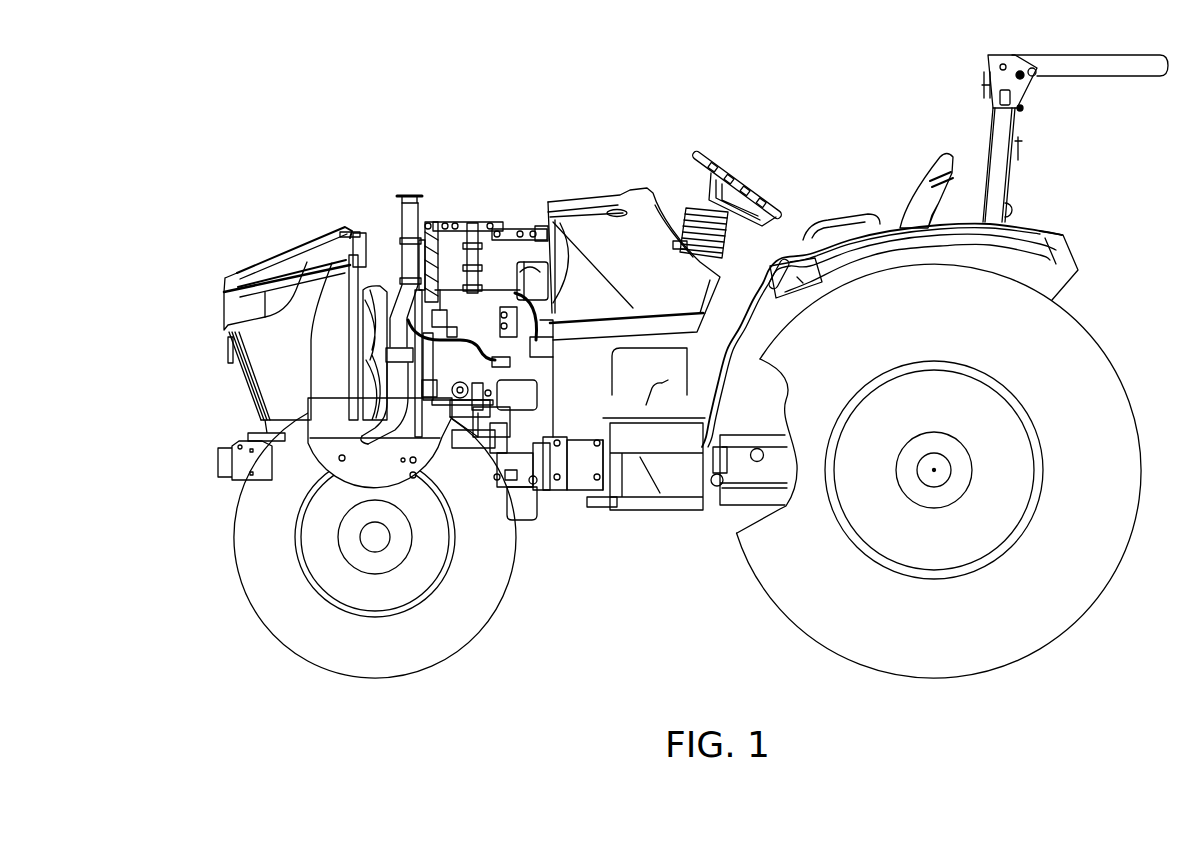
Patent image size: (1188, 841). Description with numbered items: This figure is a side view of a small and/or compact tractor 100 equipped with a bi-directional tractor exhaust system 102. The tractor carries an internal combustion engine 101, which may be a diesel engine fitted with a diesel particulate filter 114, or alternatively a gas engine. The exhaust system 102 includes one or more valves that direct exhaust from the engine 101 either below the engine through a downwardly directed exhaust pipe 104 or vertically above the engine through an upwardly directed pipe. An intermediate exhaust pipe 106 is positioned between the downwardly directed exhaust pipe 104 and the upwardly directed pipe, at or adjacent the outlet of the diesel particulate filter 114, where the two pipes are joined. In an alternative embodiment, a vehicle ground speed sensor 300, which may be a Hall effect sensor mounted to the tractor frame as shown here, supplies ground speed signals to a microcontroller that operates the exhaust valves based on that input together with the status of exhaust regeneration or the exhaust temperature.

The small and/or compact tractor 100 is at (744, 122).
The internal combustion engine 101 is at (557, 224).
The bi-directional tractor exhaust system 102 is at (331, 182).
The downwardly directed exhaust pipe 104 is at (362, 410).
The intermediate exhaust pipe 106 is at (433, 220).
The diesel particulate filter 114 is at (498, 258).
The vehicle ground speed sensor 300 is at (755, 463).